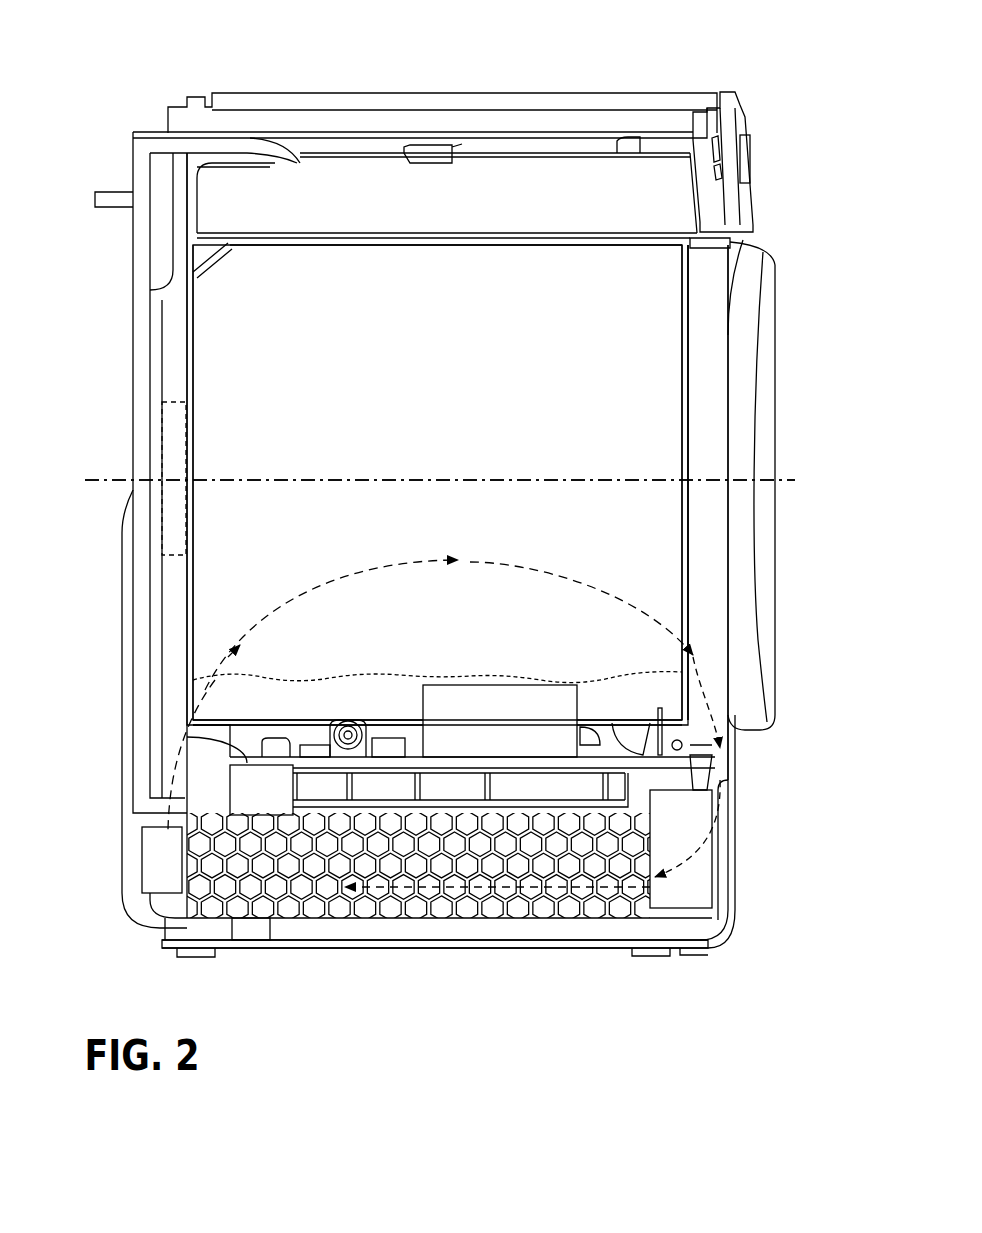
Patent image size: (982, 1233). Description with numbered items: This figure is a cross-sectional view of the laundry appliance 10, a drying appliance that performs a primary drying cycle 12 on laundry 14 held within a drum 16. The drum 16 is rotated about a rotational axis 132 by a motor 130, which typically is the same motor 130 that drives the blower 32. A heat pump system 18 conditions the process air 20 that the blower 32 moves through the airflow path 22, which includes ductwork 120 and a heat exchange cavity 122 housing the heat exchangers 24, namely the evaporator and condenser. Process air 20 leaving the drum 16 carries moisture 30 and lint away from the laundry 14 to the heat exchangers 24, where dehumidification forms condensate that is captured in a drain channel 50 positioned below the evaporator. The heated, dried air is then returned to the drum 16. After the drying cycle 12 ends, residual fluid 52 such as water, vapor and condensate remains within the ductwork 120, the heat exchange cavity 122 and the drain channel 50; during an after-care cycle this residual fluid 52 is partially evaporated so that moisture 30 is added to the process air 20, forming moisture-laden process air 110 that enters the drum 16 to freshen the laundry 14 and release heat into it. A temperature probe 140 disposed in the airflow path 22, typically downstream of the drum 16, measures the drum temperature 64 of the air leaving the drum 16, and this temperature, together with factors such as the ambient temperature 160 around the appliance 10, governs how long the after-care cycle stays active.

The laundry appliance 10 is at (245, 58).
The primary drying cycle 12 is at (785, 435).
The laundry 14 is at (228, 698).
The drum 16 is at (227, 392).
The heat pump system 18 is at (497, 923).
The process air 20 is at (603, 588).
The airflow path 22 is at (715, 767).
The heat exchanger 24 is at (575, 845).
The moisture 30 is at (722, 818).
The blower 32 is at (152, 855).
The drain channel 50 is at (355, 928).
The residual fluid 52 is at (300, 925).
The drum temperature 64 is at (697, 648).
The moisture-laden process air 110 is at (728, 710).
The ductwork 120 is at (718, 850).
The heat exchange cavity 122 is at (272, 838).
The motor 130 is at (152, 452).
The rotational axis 132 is at (793, 478).
The temperature probe 140 is at (437, 692).
The ambient temperature 160 is at (829, 256).